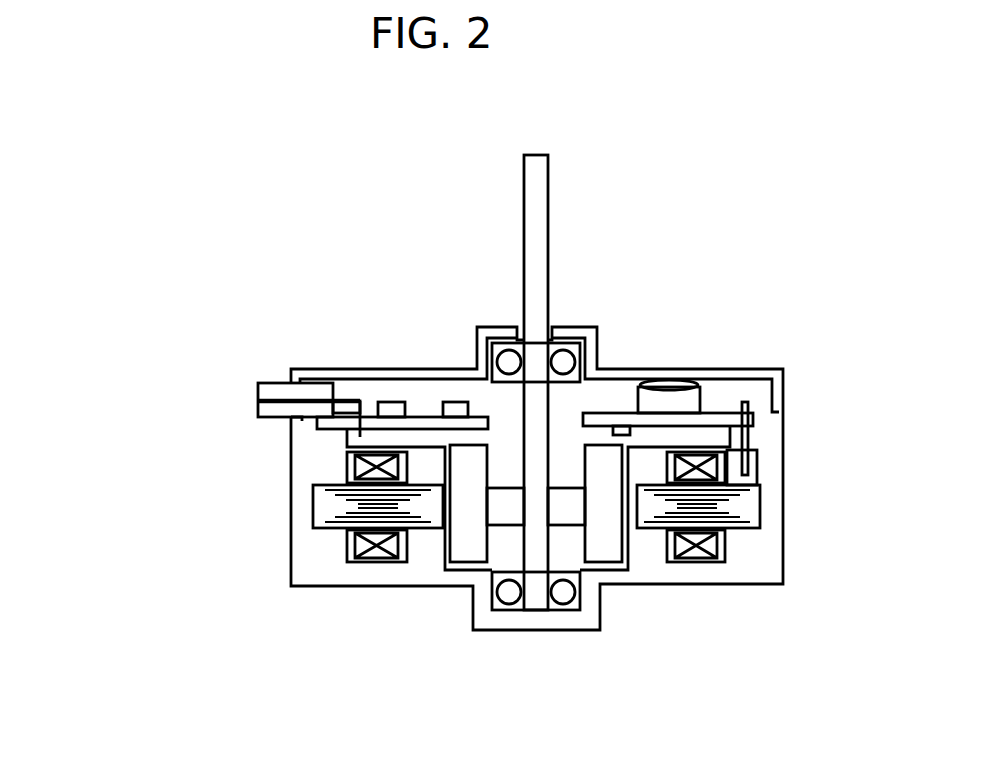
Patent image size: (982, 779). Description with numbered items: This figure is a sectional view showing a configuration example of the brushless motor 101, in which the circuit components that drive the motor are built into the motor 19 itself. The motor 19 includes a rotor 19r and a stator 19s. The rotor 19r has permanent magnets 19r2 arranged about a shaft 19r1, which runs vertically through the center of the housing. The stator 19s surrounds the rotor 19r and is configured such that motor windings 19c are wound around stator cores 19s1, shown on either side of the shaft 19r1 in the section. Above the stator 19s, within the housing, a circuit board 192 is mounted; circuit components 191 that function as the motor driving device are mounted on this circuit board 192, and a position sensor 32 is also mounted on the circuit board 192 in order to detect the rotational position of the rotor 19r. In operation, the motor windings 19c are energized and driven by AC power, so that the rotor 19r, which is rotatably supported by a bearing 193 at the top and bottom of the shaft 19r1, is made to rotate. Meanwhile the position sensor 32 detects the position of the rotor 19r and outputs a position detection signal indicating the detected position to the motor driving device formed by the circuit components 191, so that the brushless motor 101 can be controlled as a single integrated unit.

The brushless motor 101 is at (452, 348).
The motor 19 is at (290, 367).
The circuit components 191 is at (447, 402).
The position sensor 32 is at (617, 423).
The circuit board 192 is at (703, 417).
The bearing 193 is at (573, 603).
The stator 19s is at (396, 490).
The motor windings 19c is at (362, 466).
The stator cores 19s1 is at (328, 509).
The rotor 19r is at (361, 448).
The shaft 19r1 is at (533, 535).
The permanent magnets 19r2 is at (470, 550).